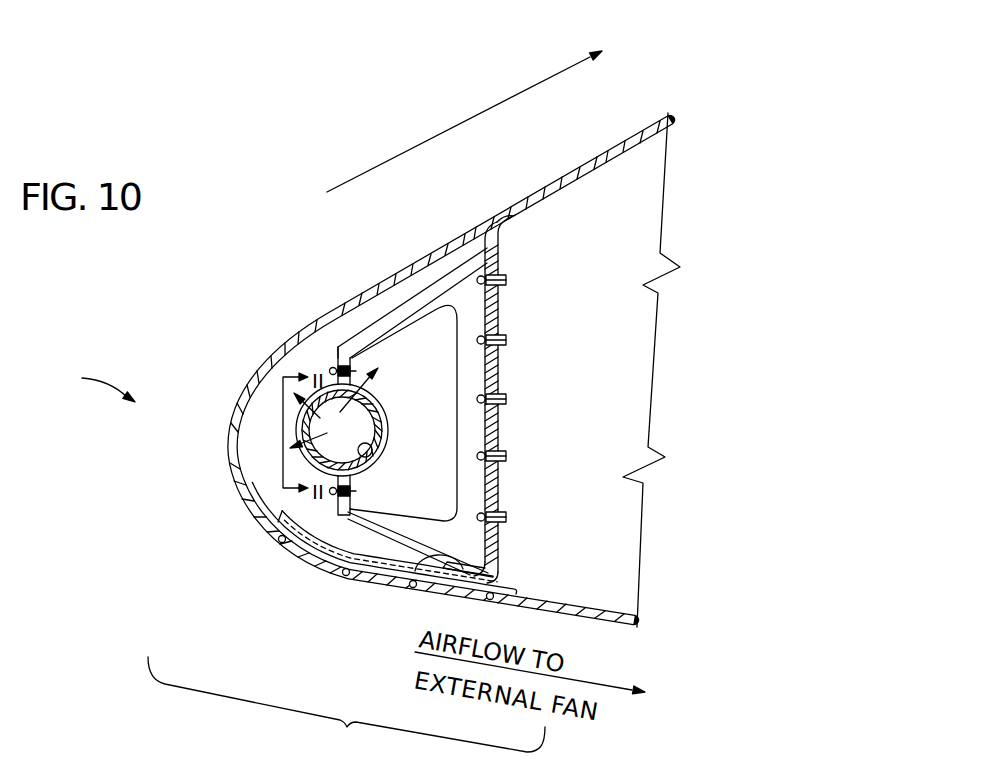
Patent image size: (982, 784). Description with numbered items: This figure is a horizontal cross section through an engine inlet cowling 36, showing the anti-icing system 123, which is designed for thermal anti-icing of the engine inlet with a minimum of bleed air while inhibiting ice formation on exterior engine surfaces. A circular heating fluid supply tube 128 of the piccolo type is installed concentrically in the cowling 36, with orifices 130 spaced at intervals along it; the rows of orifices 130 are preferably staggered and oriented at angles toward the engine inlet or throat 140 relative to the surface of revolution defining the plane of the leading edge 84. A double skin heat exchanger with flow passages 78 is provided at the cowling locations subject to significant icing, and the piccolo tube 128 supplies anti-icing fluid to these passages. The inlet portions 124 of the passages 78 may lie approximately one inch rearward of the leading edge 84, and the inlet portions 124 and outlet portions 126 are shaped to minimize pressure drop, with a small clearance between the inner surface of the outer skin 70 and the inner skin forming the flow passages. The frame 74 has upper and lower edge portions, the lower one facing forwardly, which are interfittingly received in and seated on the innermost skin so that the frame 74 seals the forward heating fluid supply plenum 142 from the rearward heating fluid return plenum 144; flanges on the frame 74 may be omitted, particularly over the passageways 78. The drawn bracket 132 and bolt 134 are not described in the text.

The engine cowling 36 is at (90, 385).
The outer skin 70 is at (272, 367).
The frame 74 is at (499, 313).
The heating fluid passageways 78 is at (302, 560).
The leading edge 84 is at (227, 460).
The anti-icing system 123 is at (346, 708).
The inlet portions 124 is at (240, 512).
The outlet portions 126 is at (494, 584).
The heating fluid supply tube 128 is at (364, 466).
The orifices 130 is at (325, 415).
The upper bracket 132 is at (407, 303).
The clamp bolt 134 is at (333, 378).
The engine inlet or throat 140 is at (484, 112).
The forward heating fluid supply plenum 142 is at (433, 388).
The rearward heating fluid return plenum 144 is at (600, 417).